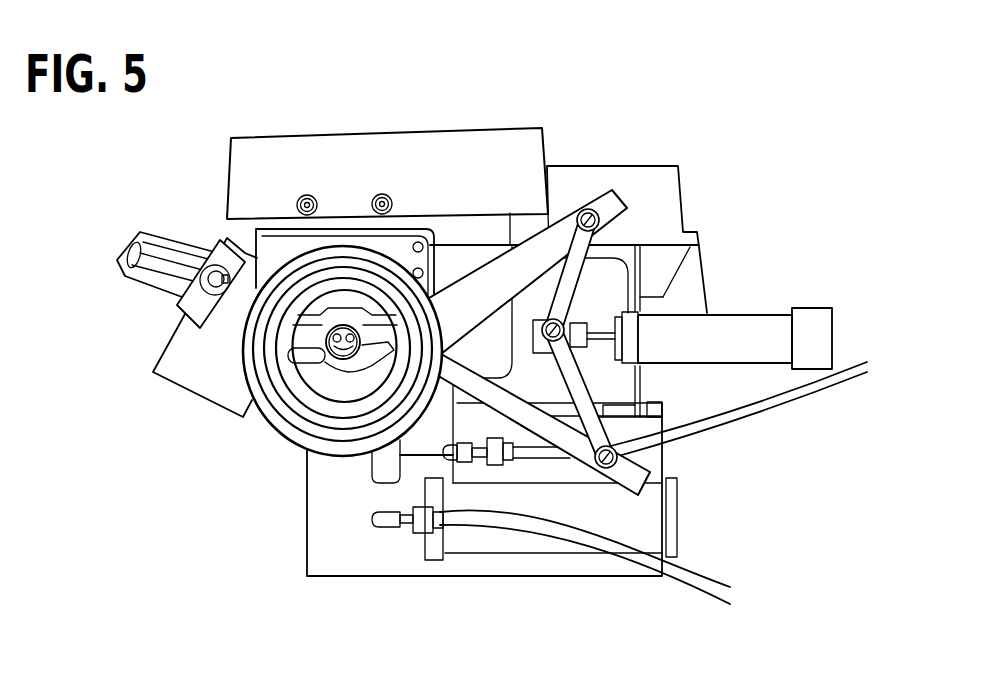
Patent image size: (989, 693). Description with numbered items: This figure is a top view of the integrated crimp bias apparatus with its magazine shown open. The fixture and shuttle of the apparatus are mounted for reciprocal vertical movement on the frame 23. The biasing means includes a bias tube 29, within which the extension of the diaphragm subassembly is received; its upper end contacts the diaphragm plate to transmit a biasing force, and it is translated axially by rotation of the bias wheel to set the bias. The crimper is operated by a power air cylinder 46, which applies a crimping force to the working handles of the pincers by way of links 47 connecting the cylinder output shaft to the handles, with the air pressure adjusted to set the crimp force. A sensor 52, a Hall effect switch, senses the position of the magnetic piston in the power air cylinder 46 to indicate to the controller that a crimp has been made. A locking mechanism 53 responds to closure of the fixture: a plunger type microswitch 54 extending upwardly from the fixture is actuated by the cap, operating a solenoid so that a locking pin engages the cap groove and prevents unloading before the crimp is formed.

The frame 23 is at (505, 157).
The bias tube 29 is at (333, 363).
The power air cylinder 46 is at (733, 335).
The links 47 is at (563, 292).
The sensor 52 is at (815, 343).
The locking mechanism 53 is at (125, 276).
The microswitch 54 is at (427, 267).